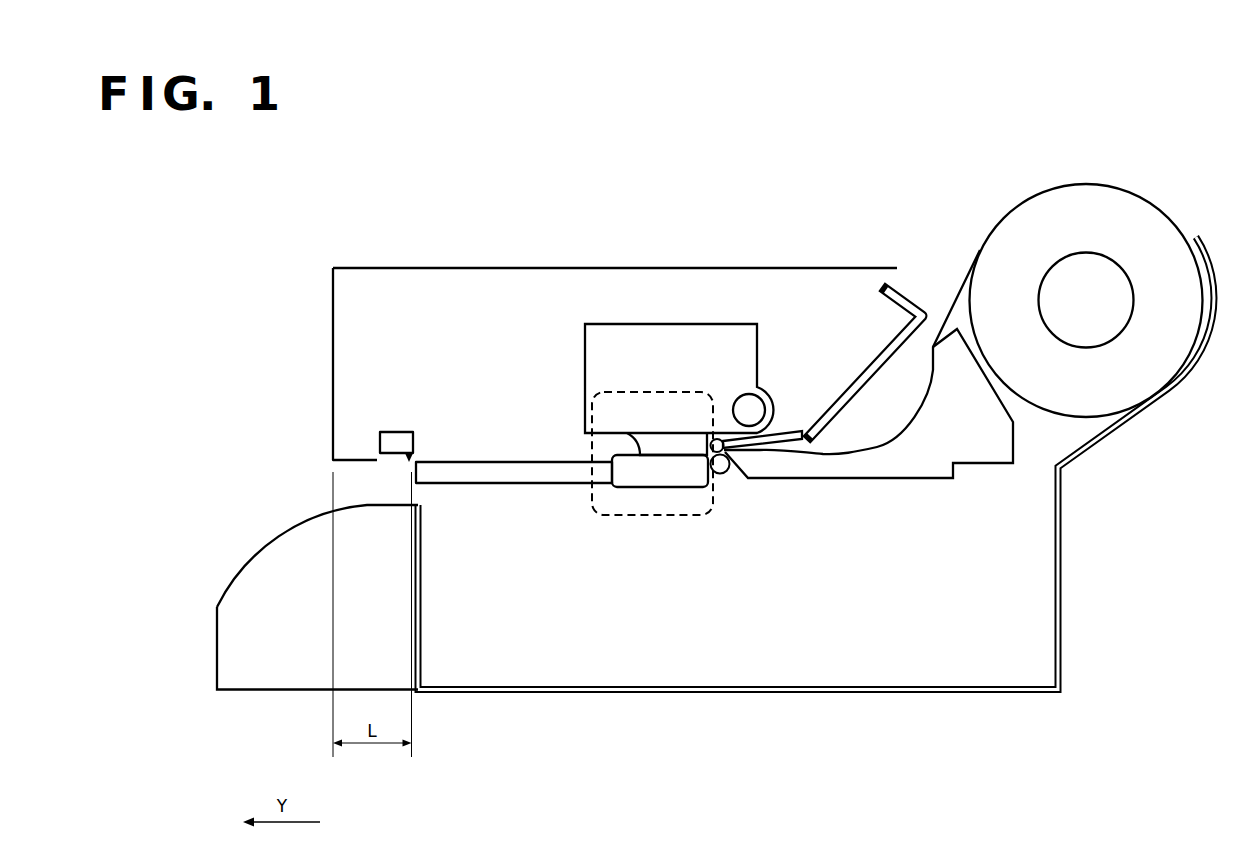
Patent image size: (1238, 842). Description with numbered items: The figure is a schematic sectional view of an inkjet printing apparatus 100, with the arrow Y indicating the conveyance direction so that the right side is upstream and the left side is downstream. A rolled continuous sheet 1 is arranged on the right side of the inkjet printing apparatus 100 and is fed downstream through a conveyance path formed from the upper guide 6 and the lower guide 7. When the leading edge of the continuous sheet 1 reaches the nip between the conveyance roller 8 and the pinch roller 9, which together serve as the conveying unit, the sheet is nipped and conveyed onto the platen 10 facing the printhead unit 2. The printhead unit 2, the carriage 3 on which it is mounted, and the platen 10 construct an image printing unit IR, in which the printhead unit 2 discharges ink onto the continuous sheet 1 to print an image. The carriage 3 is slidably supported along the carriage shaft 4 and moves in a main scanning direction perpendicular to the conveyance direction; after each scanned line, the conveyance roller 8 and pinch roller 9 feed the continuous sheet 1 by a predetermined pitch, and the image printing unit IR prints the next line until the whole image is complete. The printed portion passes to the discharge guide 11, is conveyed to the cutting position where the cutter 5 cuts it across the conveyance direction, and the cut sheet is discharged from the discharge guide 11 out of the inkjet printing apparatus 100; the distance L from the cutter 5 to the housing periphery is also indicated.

The inkjet printing apparatus 100 is at (407, 242).
The continuous sheet 1 is at (1092, 194).
The printhead unit 2 is at (670, 448).
The carriage 3 is at (663, 343).
The carriage shaft 4 is at (750, 410).
The cutter 5 is at (392, 443).
The upper guide 6 is at (920, 328).
The lower guide 7 is at (961, 426).
The conveyance roller 8 is at (725, 474).
The pinch roller 9 is at (719, 439).
The platen 10 is at (667, 477).
The discharge guide 11 is at (350, 577).
The image printing unit IR is at (588, 453).